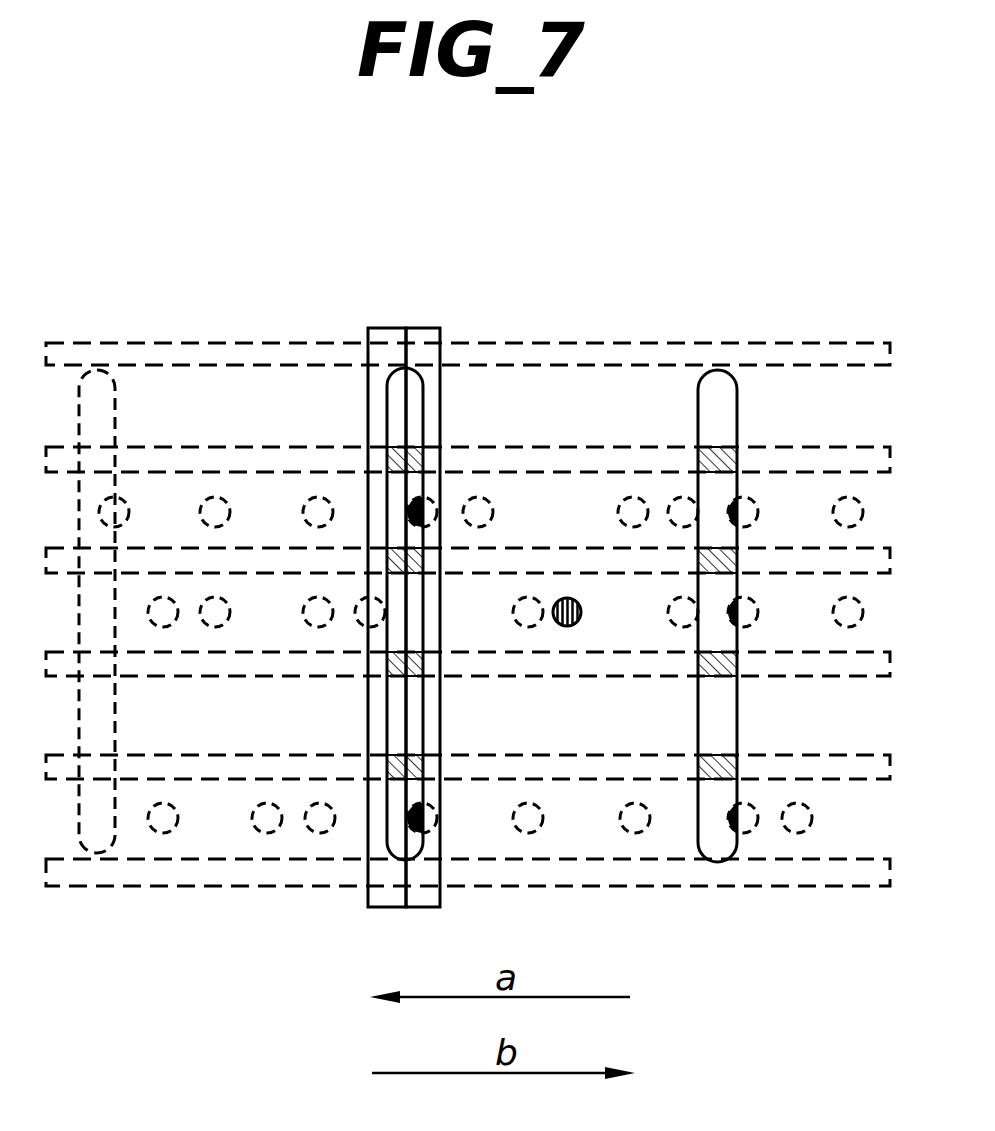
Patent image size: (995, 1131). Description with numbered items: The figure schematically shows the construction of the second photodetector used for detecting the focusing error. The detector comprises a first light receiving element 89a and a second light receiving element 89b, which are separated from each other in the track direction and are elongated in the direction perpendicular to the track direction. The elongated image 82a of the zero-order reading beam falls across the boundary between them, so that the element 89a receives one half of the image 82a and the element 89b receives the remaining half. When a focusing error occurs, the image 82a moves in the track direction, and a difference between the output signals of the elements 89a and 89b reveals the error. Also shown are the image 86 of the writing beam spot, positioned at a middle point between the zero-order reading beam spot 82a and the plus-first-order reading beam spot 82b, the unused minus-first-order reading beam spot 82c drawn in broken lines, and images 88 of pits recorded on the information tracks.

The zero-order reading beam spot image 82a is at (425, 418).
The +1-order reading beam spot 82b is at (737, 387).
The −1-order reading beam spot 82c is at (118, 418).
The writing beam spot image 86 is at (573, 625).
The image of pit 88 is at (637, 497).
The first light receiving element 89a is at (375, 328).
The second light receiving element 89b is at (433, 328).